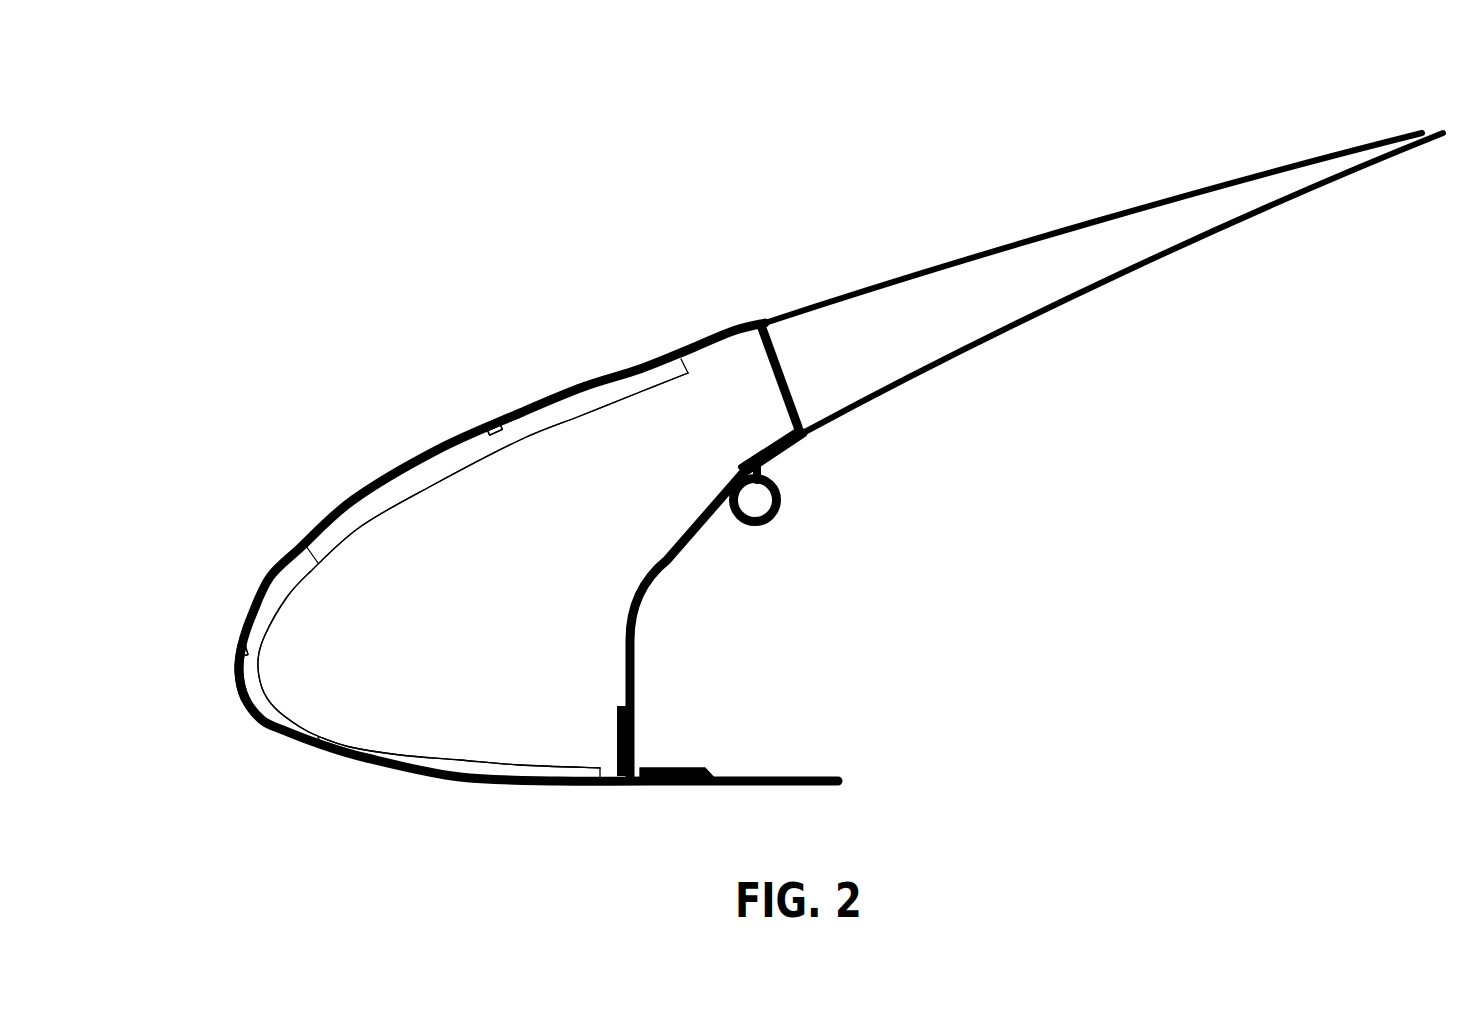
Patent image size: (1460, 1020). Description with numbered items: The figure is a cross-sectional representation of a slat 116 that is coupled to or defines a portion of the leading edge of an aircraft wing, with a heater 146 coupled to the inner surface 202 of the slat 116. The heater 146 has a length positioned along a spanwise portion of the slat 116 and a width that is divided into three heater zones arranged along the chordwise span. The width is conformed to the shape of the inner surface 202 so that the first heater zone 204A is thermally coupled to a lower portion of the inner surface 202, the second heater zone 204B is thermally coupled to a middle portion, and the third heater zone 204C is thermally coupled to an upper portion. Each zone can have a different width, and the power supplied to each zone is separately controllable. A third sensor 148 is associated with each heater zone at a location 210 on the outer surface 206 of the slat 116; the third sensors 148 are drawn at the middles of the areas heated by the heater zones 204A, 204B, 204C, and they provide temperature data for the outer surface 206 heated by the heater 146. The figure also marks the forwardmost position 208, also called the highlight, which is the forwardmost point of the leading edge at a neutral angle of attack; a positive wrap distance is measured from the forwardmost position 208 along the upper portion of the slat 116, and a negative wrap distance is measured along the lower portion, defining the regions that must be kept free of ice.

The slat 116 is at (414, 56).
The heater 146 is at (373, 539).
The third sensor 148 is at (488, 431).
The inner surface 202 is at (422, 472).
The first heater zone 204A is at (430, 765).
The second heater zone 204B is at (258, 682).
The third heater zone 204C is at (522, 428).
The outer surface 206 is at (583, 387).
The forwardmost position 208 is at (239, 670).
The location 210 is at (496, 426).